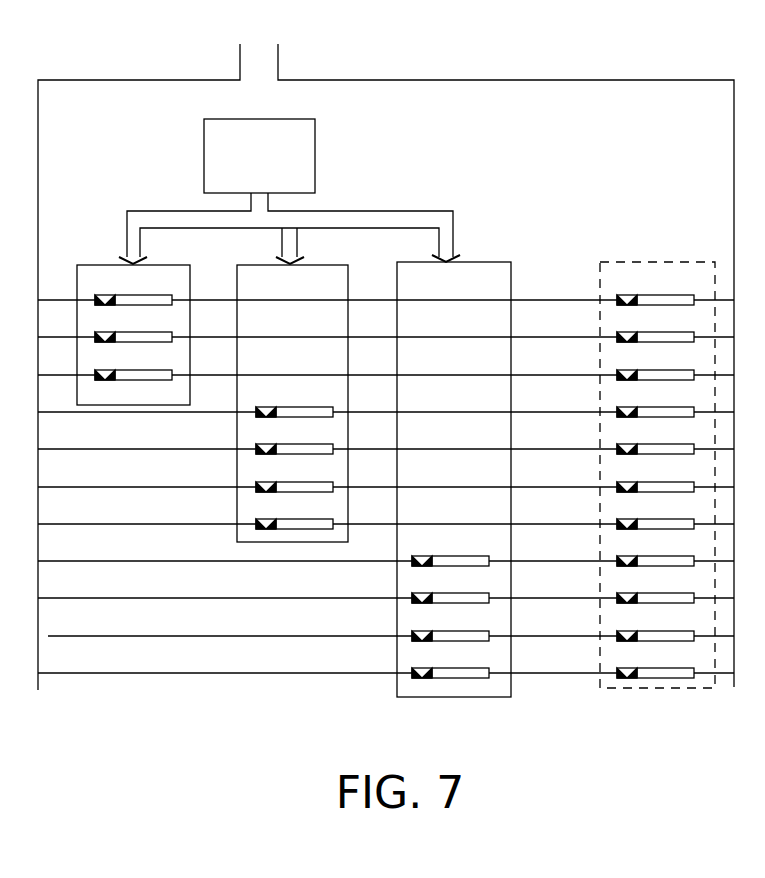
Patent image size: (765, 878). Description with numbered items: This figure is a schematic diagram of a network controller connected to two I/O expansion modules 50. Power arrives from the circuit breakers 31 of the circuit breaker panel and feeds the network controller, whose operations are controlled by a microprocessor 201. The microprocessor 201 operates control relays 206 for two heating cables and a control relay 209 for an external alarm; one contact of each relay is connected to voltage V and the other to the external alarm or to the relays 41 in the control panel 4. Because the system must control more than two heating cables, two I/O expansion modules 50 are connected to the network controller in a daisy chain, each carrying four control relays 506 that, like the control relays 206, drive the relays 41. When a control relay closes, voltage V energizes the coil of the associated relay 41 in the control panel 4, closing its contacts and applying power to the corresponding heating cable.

The circuit breaker 31 is at (268, 28).
The microprocessor 201 is at (259, 156).
The control relay 209 is at (133, 335).
The control relay 206 is at (133, 363).
The I/O expansion module 50 is at (374, 479).
The control relay 506 is at (321, 408).
The control panel 4 is at (666, 260).
The relay contacts 41 is at (655, 295).